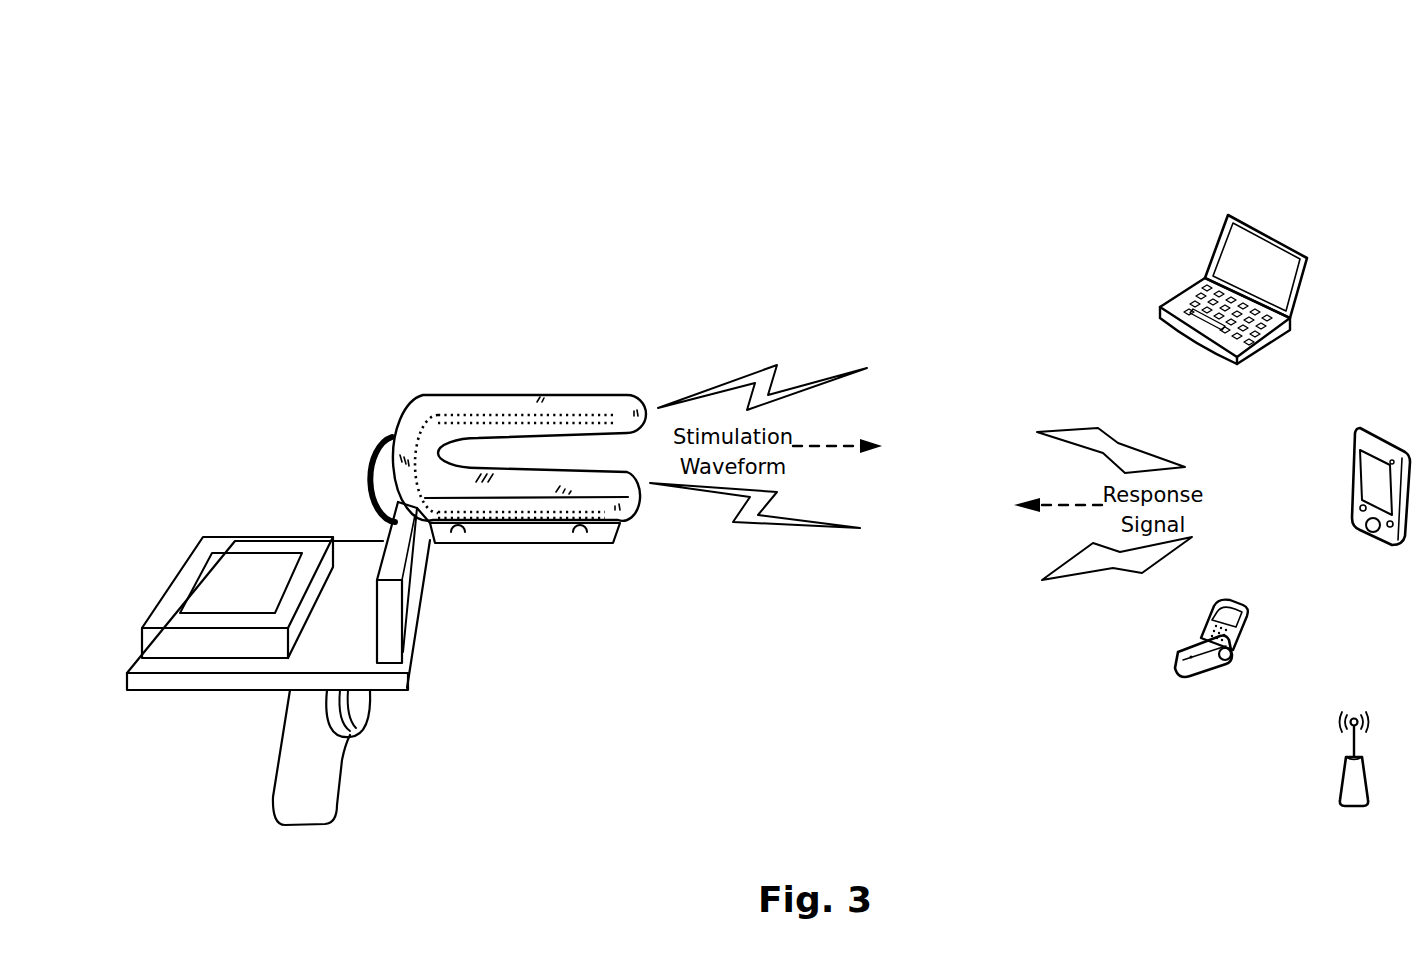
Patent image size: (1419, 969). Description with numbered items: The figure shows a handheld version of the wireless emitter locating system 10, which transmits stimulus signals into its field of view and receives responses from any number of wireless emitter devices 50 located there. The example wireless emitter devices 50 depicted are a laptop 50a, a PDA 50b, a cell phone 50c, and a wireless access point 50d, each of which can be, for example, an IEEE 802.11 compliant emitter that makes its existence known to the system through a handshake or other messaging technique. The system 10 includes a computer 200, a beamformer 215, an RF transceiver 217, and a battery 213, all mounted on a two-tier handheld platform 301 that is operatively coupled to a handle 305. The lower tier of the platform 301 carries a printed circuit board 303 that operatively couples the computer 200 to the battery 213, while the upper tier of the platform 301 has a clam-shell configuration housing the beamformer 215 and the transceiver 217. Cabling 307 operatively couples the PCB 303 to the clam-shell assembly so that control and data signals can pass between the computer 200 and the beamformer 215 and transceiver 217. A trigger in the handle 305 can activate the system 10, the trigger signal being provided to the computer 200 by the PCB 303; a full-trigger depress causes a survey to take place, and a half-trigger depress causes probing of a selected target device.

The wireless emitter locating system 10 is at (320, 265).
The wireless emitter devices 50 is at (1353, 212).
The laptop 50a is at (1233, 322).
The PDA 50b is at (1344, 486).
The cell phone 50c is at (1253, 629).
The wireless access point 50d is at (1309, 768).
The computer 200 is at (178, 570).
The battery 213 is at (388, 643).
The beamformer 215 is at (515, 415).
The RF transceiver 217 is at (480, 518).
The handheld platform 301 is at (138, 692).
The printed circuit board 303 is at (347, 590).
The handle 305 is at (338, 800).
The cabling 307 is at (363, 452).